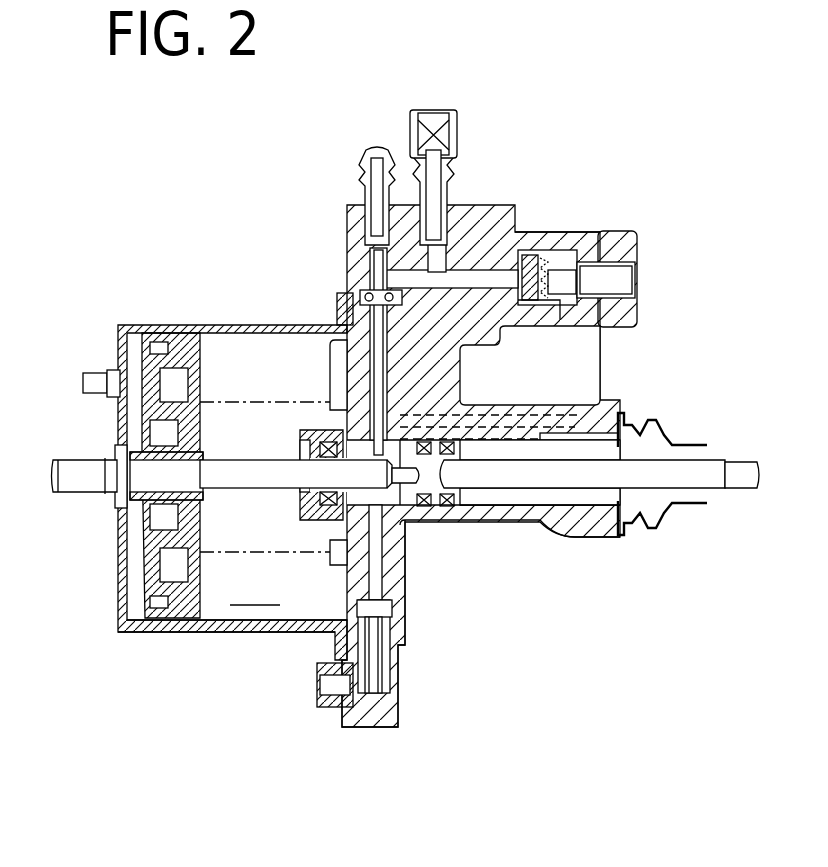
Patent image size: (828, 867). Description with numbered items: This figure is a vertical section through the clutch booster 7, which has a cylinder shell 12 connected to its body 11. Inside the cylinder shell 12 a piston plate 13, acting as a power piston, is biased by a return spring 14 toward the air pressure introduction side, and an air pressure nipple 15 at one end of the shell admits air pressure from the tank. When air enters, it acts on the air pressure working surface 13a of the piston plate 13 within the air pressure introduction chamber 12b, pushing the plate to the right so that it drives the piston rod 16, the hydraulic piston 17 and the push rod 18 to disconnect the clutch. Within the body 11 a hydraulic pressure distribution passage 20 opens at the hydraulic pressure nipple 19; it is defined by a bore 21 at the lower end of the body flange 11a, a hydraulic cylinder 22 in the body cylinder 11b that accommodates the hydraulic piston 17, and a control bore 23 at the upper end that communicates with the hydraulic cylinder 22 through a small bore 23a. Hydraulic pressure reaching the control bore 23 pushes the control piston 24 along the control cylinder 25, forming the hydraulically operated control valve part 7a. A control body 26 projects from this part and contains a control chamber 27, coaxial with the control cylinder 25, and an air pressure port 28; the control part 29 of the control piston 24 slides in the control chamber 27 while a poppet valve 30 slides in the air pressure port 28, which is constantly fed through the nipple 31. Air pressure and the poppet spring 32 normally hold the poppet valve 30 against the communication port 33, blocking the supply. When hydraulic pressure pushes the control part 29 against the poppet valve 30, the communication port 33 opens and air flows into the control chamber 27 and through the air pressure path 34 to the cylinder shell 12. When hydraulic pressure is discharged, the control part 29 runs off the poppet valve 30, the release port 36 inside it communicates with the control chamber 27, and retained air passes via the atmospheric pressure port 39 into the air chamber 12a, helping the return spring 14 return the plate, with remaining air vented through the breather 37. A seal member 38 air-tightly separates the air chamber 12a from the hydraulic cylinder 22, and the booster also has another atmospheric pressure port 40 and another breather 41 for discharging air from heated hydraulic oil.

The clutch booster 7 is at (252, 200).
The control valve part 7a is at (550, 195).
The body 11 is at (340, 247).
The body flange 11a is at (403, 557).
The body cylinder 11b is at (480, 517).
The cylinder shell 12 is at (240, 322).
The air chamber 12a is at (255, 590).
The air pressure introduction chamber 12b is at (133, 597).
The piston plate 13 is at (145, 418).
The air pressure working surface 13a is at (150, 545).
The return spring 14 is at (190, 398).
The air pressure nipple 15 is at (97, 340).
The piston rod 16 is at (237, 470).
The hydraulic piston 17 is at (437, 520).
The push rod 18 is at (703, 480).
The hydraulic pressure nipple 19 is at (323, 703).
The hydraulic pressure distribution passage 20 is at (377, 583).
The bore 21 is at (403, 610).
The hydraulic cylinder 22 is at (333, 525).
The control bore 23 is at (358, 348).
The small bore 23a is at (335, 402).
The control piston 24 is at (372, 275).
The control cylinder 25 is at (362, 297).
The control body 26 is at (510, 173).
The control chamber 27 is at (500, 237).
The air pressure port 28 is at (567, 247).
The control part 29 is at (457, 232).
The poppet valve 30 is at (533, 257).
The nipple 31 is at (633, 245).
The poppet spring 32 is at (560, 265).
The communication port 33 is at (550, 307).
The air pressure path 34 is at (520, 292).
The release port 36 is at (440, 372).
The breather 37 is at (453, 175).
The seal member 38 is at (318, 500).
The atmospheric pressure port 39 is at (478, 393).
The atmospheric pressure port 40 is at (533, 410).
The breather 41 is at (358, 192).